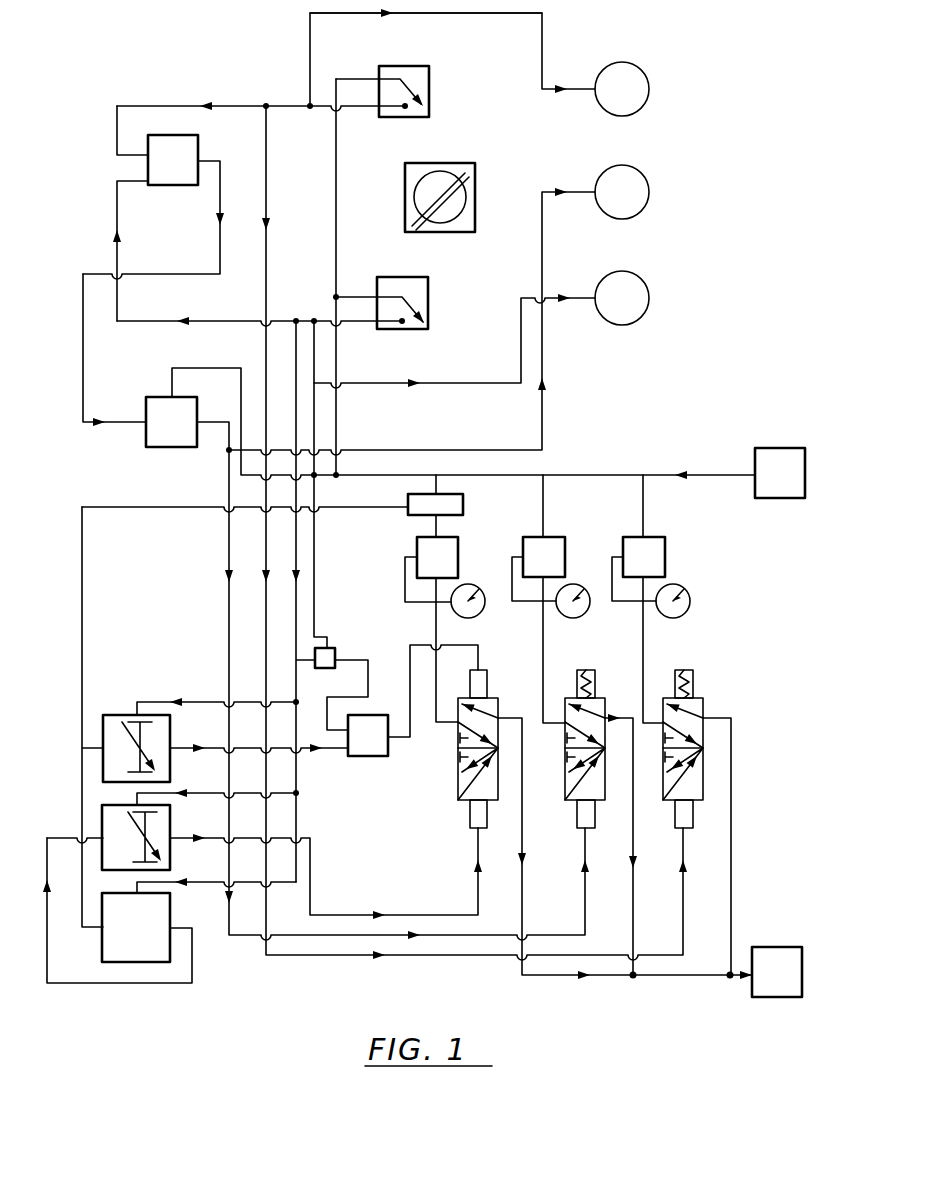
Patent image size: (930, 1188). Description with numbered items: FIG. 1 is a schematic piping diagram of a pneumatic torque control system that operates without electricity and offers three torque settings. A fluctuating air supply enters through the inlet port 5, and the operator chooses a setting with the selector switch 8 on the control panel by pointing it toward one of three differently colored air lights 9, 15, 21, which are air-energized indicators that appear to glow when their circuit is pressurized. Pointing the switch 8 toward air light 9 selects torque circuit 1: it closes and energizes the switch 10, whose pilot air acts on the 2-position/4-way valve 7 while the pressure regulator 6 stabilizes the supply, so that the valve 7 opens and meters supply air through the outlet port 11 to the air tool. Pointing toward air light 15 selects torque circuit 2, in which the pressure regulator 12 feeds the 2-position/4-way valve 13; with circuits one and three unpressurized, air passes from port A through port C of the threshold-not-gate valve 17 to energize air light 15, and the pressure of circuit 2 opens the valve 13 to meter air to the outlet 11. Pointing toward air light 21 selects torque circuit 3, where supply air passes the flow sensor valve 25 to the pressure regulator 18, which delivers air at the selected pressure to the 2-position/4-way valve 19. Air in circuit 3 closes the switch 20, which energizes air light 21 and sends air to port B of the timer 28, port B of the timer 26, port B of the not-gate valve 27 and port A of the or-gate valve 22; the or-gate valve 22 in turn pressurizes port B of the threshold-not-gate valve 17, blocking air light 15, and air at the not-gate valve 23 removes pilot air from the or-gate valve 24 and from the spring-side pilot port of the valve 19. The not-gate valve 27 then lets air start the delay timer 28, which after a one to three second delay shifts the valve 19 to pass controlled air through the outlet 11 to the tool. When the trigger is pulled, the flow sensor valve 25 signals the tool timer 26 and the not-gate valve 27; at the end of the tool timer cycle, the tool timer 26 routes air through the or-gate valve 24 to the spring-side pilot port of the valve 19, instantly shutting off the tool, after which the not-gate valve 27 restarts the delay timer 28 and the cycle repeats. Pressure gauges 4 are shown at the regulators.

The torque circuit 1 is at (442, 13).
The torque circuit 2 is at (500, 455).
The torque circuit 3 is at (117, 200).
The pressure gauge 4 is at (478, 616).
The inlet port 5 is at (765, 498).
The pressure regulator 6 is at (645, 535).
The 2-position/4-way valve 7 is at (663, 783).
The selector switch 8 is at (440, 232).
The air light 9 is at (643, 110).
The switch 10 is at (412, 117).
The outlet port 11 is at (770, 997).
The pressure regulator 12 is at (545, 535).
The 2-position/4-way valve 13 is at (565, 783).
The air light 15 is at (643, 213).
The threshold-not-gate valve 17 is at (160, 447).
The pressure regulator 18 is at (436, 535).
The 2-position/4-way valve 19 is at (458, 782).
The switch 20 is at (425, 329).
The air light 21 is at (643, 320).
The or-gate valve 22 is at (165, 185).
The not-gate valve 23 is at (337, 650).
The or-gate valve 24 is at (375, 756).
The flow sensor valve 25 is at (408, 508).
The tool timer 26 is at (103, 714).
The not-gate valve 27 is at (130, 963).
The delay timer 28 is at (102, 813).